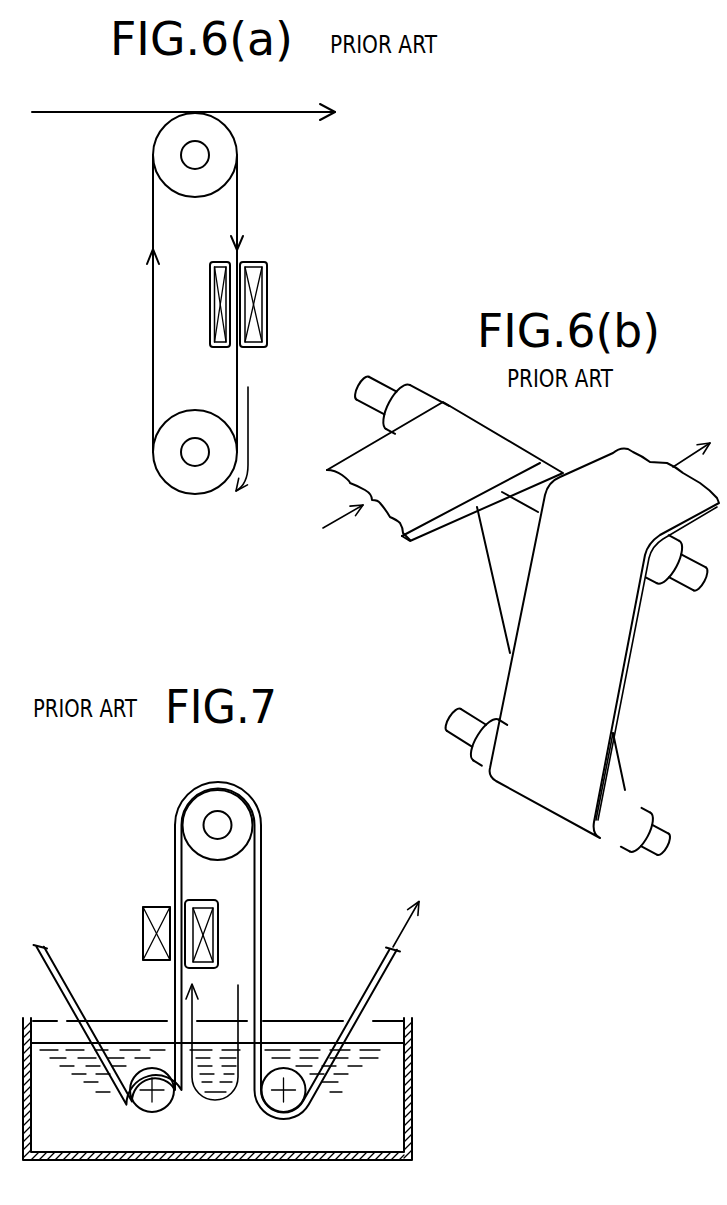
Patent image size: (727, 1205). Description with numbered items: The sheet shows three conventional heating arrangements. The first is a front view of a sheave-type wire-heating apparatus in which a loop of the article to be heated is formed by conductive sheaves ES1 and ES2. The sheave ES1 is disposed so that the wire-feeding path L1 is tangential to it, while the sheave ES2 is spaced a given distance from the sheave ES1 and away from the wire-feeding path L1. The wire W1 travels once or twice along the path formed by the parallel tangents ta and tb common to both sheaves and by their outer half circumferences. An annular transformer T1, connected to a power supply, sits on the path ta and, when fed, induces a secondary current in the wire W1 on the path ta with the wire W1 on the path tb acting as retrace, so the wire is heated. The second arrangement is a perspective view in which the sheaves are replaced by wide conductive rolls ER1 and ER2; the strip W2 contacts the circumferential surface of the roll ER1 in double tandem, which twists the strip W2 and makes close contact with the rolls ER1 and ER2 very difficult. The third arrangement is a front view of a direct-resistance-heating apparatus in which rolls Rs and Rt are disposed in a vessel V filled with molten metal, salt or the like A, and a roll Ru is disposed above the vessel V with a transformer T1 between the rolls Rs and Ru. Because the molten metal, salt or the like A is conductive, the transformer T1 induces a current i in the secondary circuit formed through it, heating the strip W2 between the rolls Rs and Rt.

The wire W1 is at (85, 113).
The wire-feeding path L1 is at (350, 116).
The conductive sheave ES1 is at (237, 151).
The conductive sheave ES2 is at (155, 467).
The tangent path ta is at (238, 218).
The tangent path tb is at (152, 347).
The annular transformer T1 is at (272, 292).
In FIG. 7, the annular transformer T1 is at (135, 922).
The current i is at (249, 432).
In FIG. 7, the current i is at (215, 1025).
The strip W2 is at (437, 527).
In FIG. 7, the strip W2 is at (66, 985).
The wide conductive roll ER1 is at (647, 577).
The wide conductive roll ER2 is at (477, 760).
In FIG. 7, the roll Ru is at (188, 823).
In FIG. 7, the roll Rs is at (135, 1098).
In FIG. 7, the roll Rt is at (288, 1102).
In FIG. 7, the vessel V is at (413, 1065).
In FIG. 7, the molten metal, salt or the like A is at (383, 1095).